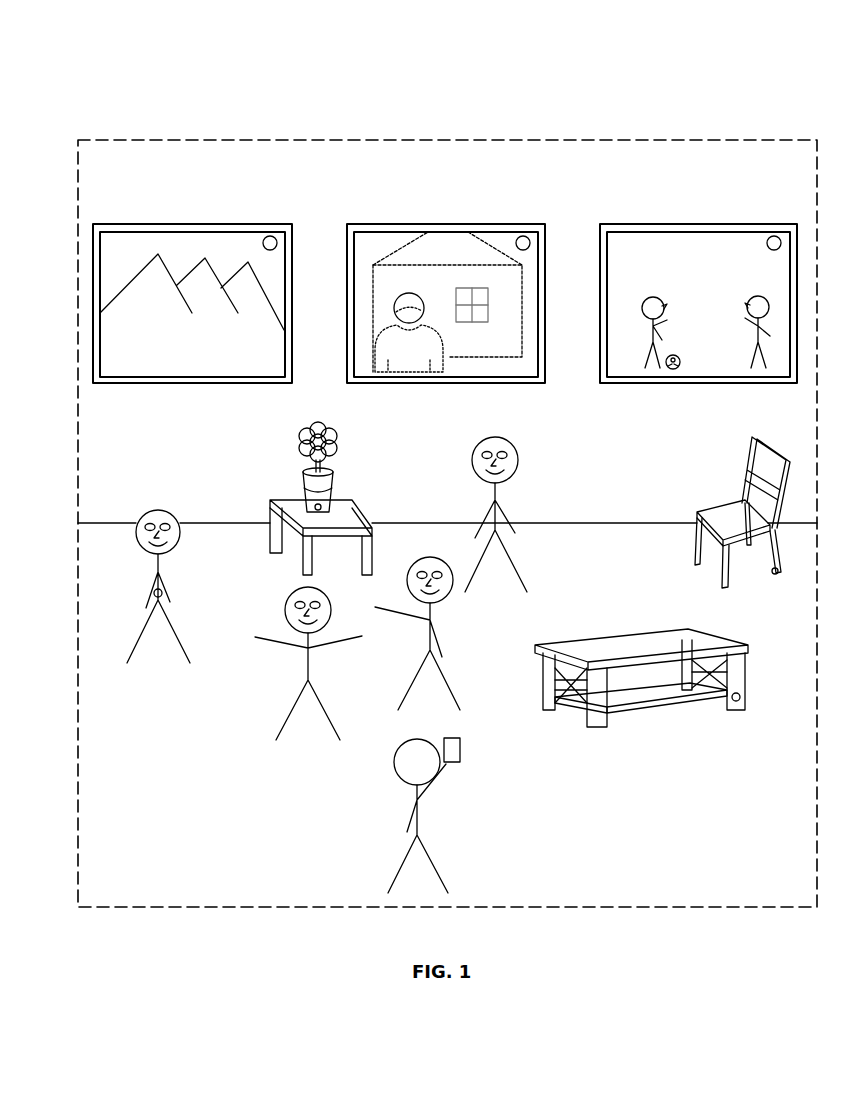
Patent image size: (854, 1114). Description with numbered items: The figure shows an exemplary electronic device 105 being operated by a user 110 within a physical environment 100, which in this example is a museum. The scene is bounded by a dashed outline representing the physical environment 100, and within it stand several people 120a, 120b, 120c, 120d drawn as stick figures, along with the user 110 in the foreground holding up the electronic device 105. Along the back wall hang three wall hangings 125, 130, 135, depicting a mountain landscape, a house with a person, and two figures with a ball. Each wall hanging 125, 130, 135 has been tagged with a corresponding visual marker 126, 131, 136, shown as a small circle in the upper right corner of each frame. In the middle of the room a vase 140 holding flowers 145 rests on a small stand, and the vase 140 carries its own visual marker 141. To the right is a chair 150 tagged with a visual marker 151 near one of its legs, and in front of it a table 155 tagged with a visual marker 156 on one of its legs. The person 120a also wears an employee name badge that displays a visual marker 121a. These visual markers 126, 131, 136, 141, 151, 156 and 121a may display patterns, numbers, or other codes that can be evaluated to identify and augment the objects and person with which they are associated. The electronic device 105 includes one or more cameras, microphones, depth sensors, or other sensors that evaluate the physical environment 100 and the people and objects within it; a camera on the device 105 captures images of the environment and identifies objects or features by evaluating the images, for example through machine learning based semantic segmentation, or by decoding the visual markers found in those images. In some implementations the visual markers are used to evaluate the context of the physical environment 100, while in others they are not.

The physical environment 100 is at (52, 75).
The electronic device 105 is at (460, 750).
The user 110 is at (440, 885).
The person 120a is at (172, 628).
The person 120b is at (320, 704).
The person 120c is at (507, 557).
The person 120d is at (445, 676).
The visual marker 121a is at (162, 593).
The wall hanging 125 is at (105, 224).
The visual marker 126 is at (270, 236).
The wall hanging 130 is at (370, 224).
The visual marker 131 is at (523, 236).
The wall hanging 135 is at (645, 224).
The visual marker 136 is at (774, 236).
The vase 140 is at (335, 490).
The visual marker 141 is at (325, 510).
The flowers 145 is at (335, 445).
The chair 150 is at (762, 450).
The visual marker 151 is at (778, 571).
The table 155 is at (688, 632).
The visual marker 156 is at (740, 697).